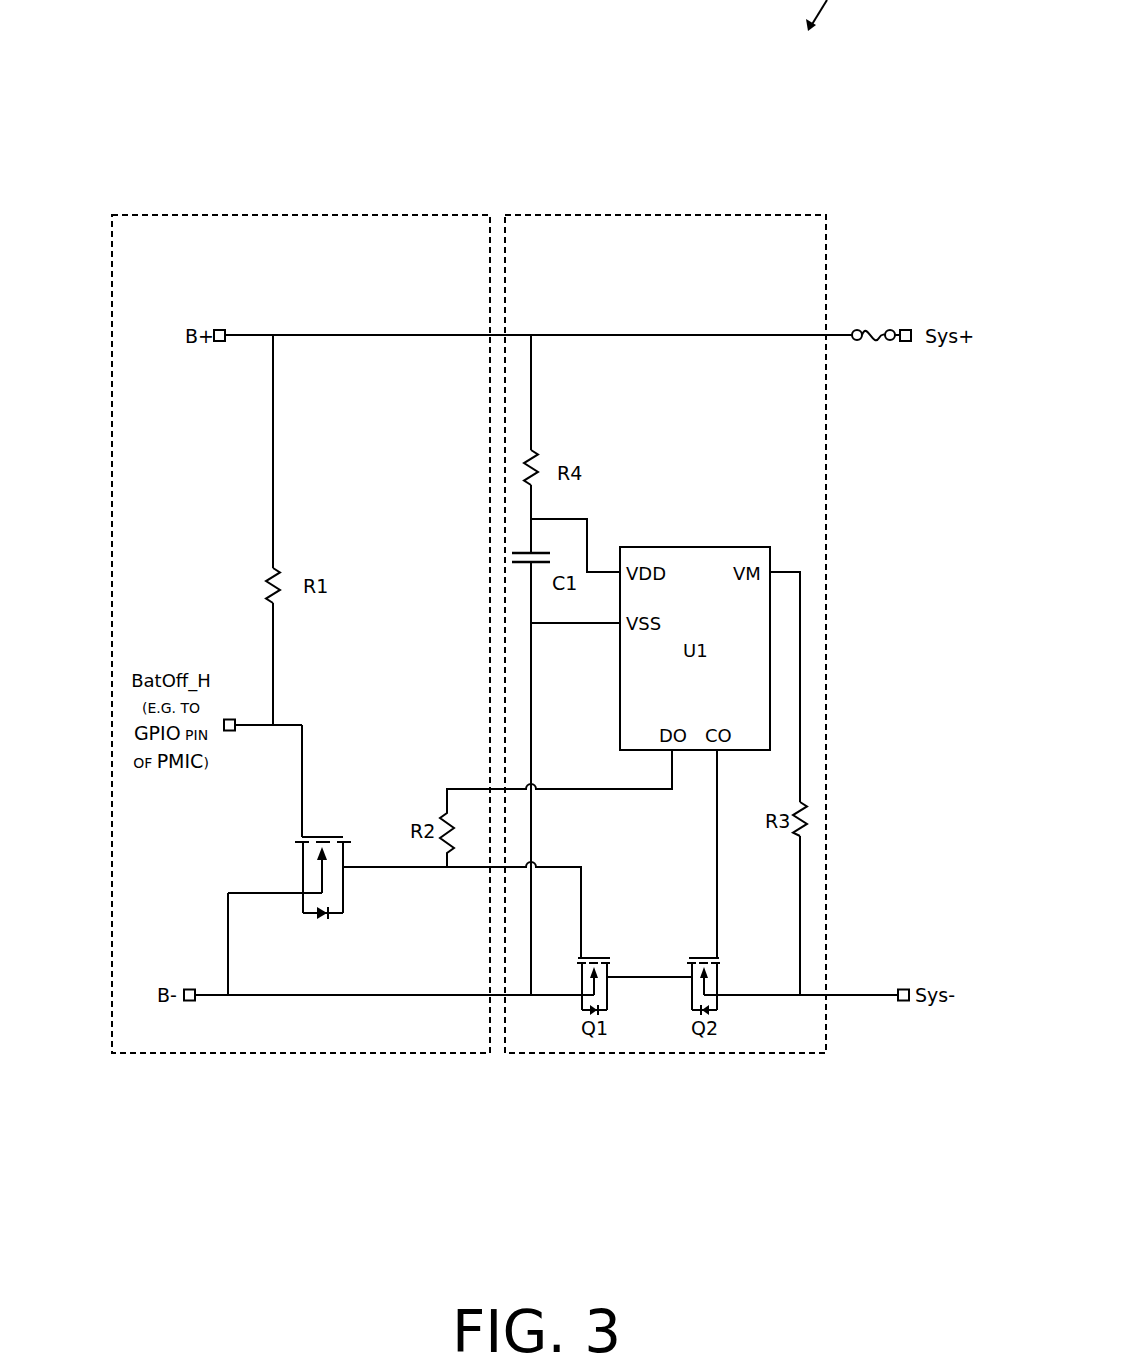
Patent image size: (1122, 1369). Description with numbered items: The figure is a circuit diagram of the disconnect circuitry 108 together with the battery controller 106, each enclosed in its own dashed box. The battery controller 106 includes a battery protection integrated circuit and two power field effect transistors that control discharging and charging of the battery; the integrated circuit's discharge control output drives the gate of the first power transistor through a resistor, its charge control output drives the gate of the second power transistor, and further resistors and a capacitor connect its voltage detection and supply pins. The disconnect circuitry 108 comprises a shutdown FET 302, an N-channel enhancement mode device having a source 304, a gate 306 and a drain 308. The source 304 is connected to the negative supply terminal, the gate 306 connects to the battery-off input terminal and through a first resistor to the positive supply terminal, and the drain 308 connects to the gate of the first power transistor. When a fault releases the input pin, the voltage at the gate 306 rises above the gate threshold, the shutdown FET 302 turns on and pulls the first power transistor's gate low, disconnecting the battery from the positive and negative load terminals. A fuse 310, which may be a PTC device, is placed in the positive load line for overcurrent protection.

The disconnect circuitry 108 is at (301, 634).
The battery controller 106 is at (665, 634).
The fuse 310 is at (873, 372).
The shutdown FET 302 is at (309, 944).
The source 304 is at (263, 916).
The gate 306 is at (329, 781).
The drain 308 is at (462, 910).